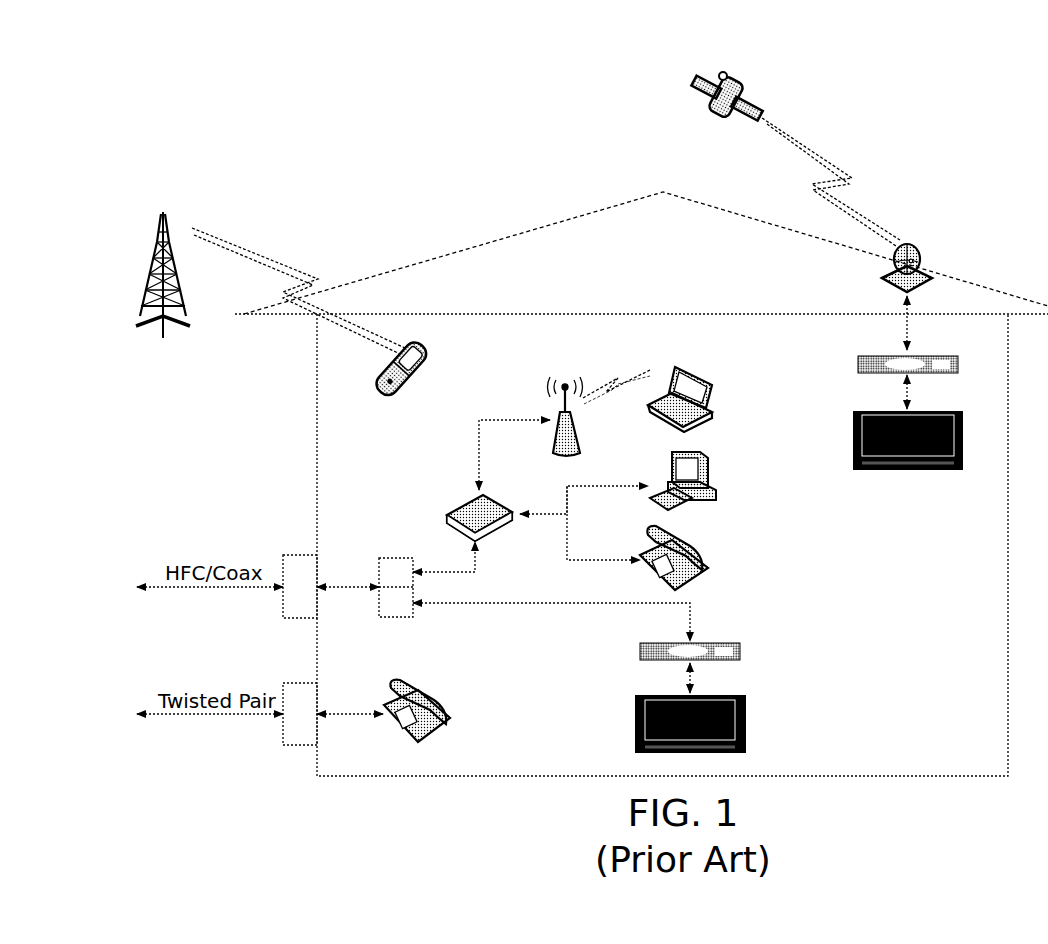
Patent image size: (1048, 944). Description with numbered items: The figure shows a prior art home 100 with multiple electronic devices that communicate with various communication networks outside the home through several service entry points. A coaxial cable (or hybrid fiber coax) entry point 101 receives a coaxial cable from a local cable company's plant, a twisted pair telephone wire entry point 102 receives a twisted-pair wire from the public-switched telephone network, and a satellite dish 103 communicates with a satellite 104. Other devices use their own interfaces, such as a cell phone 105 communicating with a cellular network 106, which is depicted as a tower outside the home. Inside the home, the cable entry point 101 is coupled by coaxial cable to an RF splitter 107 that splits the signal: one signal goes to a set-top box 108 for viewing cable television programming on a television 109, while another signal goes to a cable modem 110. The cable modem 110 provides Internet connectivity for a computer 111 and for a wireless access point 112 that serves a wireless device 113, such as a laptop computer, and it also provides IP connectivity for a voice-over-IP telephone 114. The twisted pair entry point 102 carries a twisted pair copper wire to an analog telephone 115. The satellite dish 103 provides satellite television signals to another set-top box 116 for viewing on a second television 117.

The home 100 is at (512, 236).
The coaxial cable entry point 101 is at (258, 569).
The twisted pair telephone wire entry point 102 is at (262, 736).
The satellite dish 103 is at (952, 240).
The satellite 104 is at (770, 81).
The cell phone 105 is at (440, 365).
The cellular network 106 is at (197, 256).
The RF splitter 107 is at (375, 576).
The set-top box 108 is at (654, 641).
The television 109 is at (655, 724).
The cable modem 110 is at (448, 511).
The computer 111 is at (730, 487).
The wireless access point 112 is at (528, 409).
The wireless device 113 is at (711, 395).
The voice-over-IP telephone 114 is at (720, 558).
The analog telephone 115 is at (449, 699).
The set-top box 116 is at (871, 353).
The television 117 is at (871, 440).